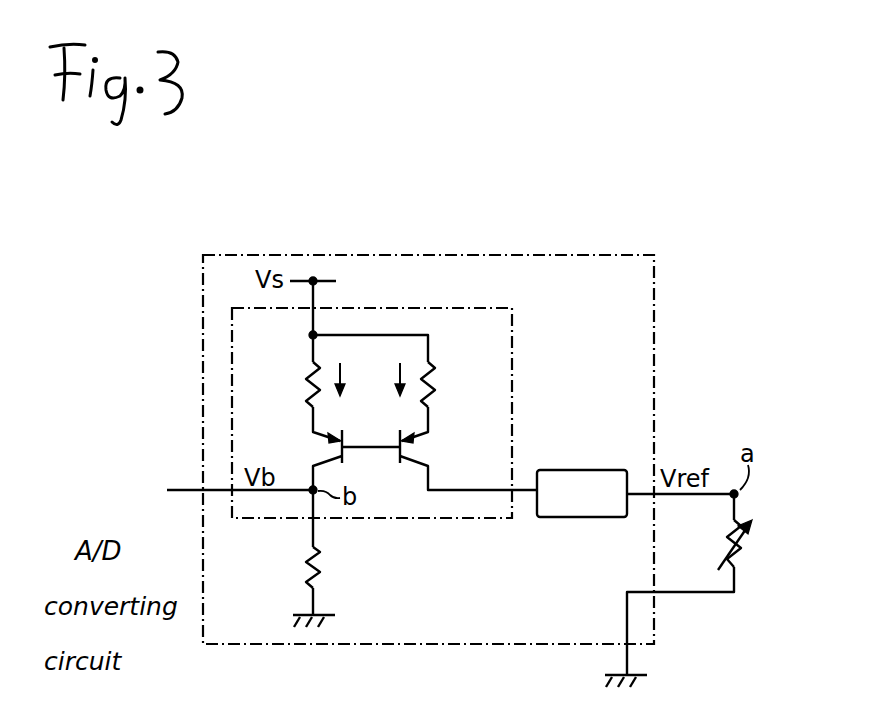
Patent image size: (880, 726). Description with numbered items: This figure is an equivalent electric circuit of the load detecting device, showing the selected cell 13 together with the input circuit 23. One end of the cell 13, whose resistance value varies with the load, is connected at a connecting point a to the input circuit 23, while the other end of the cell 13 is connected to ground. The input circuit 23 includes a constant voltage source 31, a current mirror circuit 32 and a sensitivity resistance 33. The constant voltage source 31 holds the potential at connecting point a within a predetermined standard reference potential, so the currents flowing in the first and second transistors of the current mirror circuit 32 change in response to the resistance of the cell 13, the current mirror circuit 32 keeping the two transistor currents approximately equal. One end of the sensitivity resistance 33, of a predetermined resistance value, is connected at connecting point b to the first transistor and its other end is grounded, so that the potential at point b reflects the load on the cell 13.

The input circuit 23 is at (597, 256).
The current mirror circuit 32 is at (512, 343).
The constant voltage source 31 is at (602, 470).
The sensitivity resistance 33 is at (306, 568).
The cell 13 is at (750, 541).